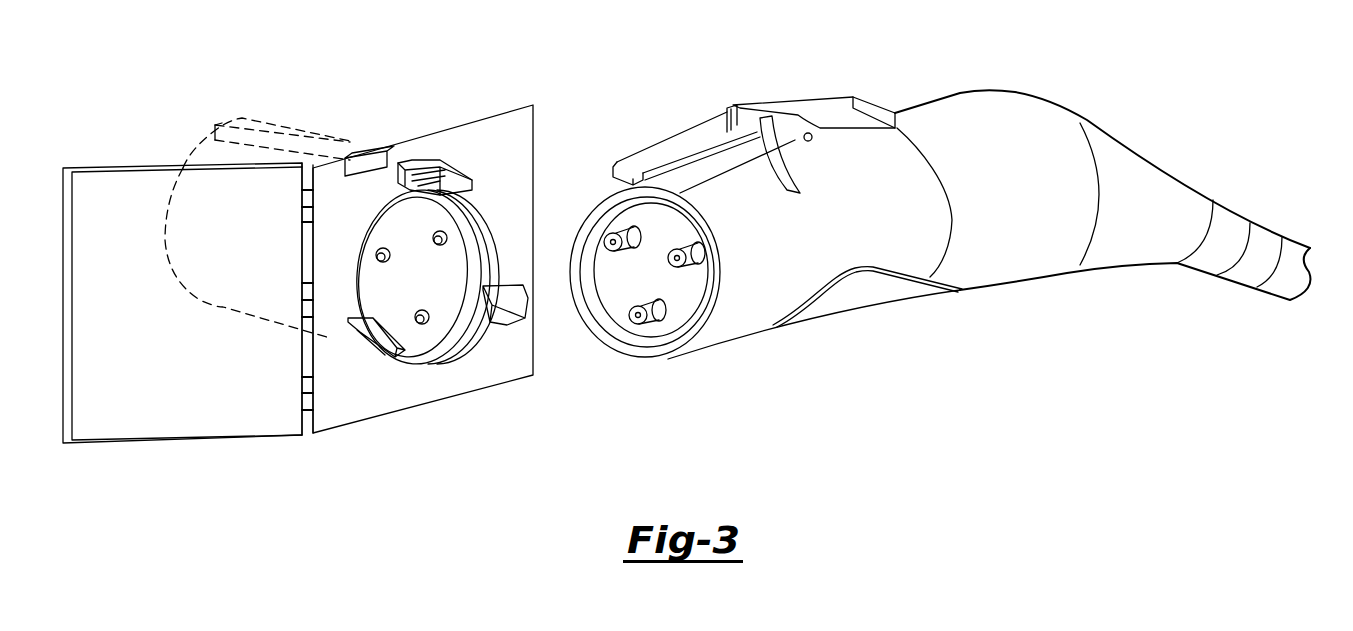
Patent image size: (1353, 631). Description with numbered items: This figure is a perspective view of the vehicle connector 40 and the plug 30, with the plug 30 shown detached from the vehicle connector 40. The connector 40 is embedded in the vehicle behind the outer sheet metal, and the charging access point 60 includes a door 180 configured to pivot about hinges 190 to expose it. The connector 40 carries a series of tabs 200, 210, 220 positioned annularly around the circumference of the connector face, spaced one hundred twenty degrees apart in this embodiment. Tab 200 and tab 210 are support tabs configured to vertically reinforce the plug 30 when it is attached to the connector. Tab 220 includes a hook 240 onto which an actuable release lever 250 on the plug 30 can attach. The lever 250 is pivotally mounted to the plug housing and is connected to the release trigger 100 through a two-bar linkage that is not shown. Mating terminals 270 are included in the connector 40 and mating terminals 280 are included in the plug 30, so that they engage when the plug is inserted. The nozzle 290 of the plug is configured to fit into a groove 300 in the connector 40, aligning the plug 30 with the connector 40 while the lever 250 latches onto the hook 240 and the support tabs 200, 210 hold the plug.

The plug 30 is at (1047, 120).
The vehicle connector 40 is at (350, 193).
The charging access point 60 is at (377, 125).
The release trigger 100 is at (880, 287).
The door 180 is at (153, 343).
The hinges 190 is at (297, 298).
The tab 200 is at (382, 357).
The tab 210 is at (493, 308).
The tab 220 is at (420, 187).
The hook 240 is at (448, 162).
The release lever 250 is at (680, 152).
The mating terminals 270 is at (447, 236).
The mating terminals 280 is at (612, 242).
The nozzle 290 is at (737, 313).
The groove 300 is at (477, 265).